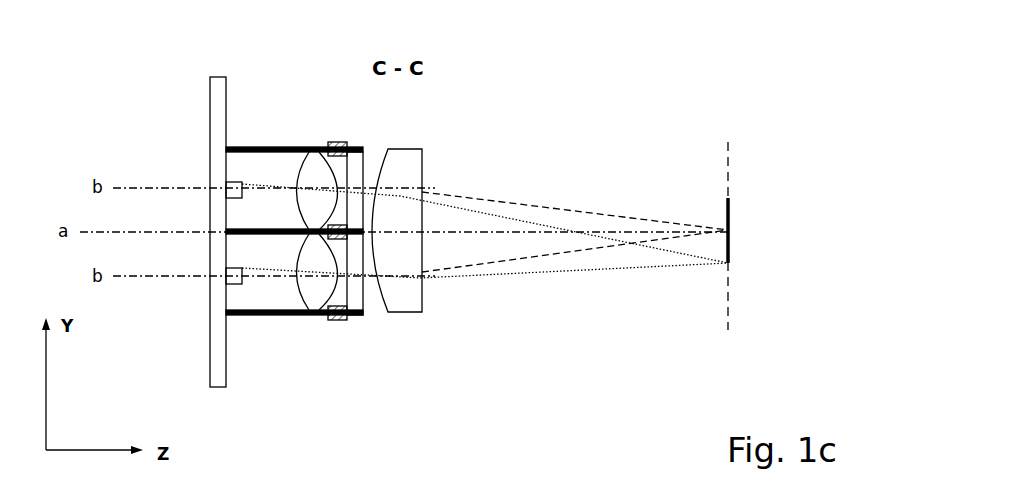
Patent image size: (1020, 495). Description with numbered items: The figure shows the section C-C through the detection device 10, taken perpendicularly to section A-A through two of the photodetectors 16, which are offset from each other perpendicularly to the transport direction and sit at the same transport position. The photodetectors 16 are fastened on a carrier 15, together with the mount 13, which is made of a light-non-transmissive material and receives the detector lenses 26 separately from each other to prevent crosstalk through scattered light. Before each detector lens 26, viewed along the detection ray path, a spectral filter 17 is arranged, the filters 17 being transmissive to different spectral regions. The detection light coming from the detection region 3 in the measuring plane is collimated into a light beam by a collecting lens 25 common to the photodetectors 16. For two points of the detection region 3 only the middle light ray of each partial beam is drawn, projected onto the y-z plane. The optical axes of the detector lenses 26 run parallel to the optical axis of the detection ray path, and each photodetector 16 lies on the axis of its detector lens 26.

The detection region 3 is at (742, 241).
The detection device 10 is at (341, 372).
The mount 13 is at (287, 318).
The carrier 15 is at (209, 370).
The photodetectors 16 is at (234, 267).
The spectral filter 17 is at (357, 300).
The collecting lens 25 is at (422, 312).
The detector lens 26 is at (320, 257).